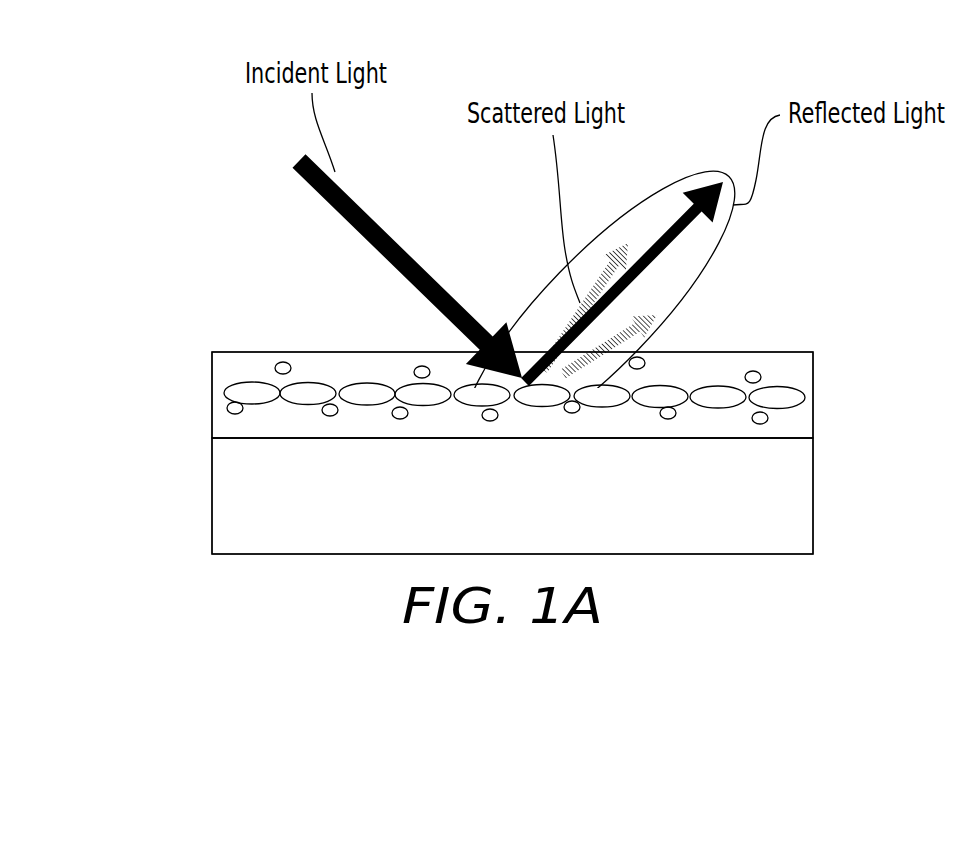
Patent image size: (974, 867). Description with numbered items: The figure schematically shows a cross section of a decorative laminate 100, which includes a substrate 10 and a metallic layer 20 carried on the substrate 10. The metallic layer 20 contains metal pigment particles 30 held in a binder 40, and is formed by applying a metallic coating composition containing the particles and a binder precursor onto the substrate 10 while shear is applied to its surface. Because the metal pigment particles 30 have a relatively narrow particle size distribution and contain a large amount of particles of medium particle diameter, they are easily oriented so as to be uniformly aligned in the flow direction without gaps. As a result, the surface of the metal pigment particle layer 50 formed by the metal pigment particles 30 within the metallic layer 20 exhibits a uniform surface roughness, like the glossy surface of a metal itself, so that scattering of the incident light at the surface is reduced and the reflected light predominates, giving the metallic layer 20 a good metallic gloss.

The decorative laminate 100 is at (811, 306).
The substrate 10 is at (793, 510).
The metallic layer 20 is at (833, 352).
The metal pigment particles 30 is at (283, 364).
The binder 40 is at (210, 430).
The metal pigment particle layer 50 is at (197, 380).